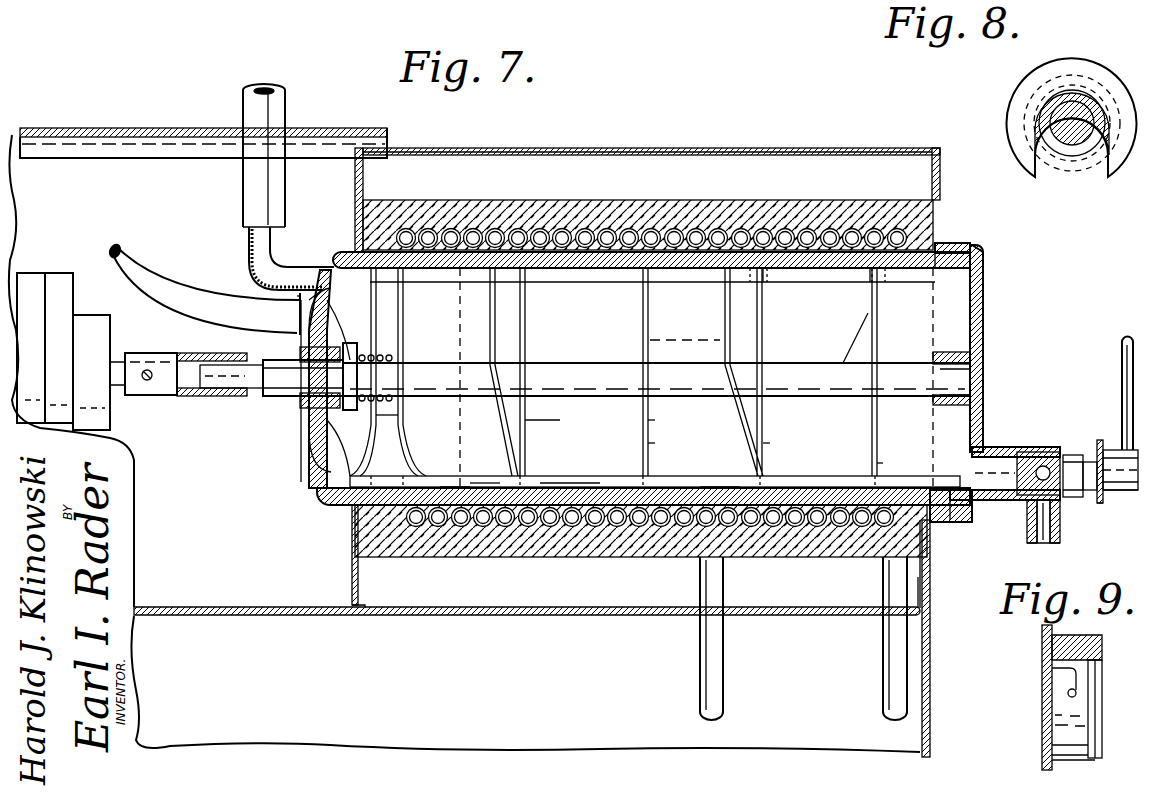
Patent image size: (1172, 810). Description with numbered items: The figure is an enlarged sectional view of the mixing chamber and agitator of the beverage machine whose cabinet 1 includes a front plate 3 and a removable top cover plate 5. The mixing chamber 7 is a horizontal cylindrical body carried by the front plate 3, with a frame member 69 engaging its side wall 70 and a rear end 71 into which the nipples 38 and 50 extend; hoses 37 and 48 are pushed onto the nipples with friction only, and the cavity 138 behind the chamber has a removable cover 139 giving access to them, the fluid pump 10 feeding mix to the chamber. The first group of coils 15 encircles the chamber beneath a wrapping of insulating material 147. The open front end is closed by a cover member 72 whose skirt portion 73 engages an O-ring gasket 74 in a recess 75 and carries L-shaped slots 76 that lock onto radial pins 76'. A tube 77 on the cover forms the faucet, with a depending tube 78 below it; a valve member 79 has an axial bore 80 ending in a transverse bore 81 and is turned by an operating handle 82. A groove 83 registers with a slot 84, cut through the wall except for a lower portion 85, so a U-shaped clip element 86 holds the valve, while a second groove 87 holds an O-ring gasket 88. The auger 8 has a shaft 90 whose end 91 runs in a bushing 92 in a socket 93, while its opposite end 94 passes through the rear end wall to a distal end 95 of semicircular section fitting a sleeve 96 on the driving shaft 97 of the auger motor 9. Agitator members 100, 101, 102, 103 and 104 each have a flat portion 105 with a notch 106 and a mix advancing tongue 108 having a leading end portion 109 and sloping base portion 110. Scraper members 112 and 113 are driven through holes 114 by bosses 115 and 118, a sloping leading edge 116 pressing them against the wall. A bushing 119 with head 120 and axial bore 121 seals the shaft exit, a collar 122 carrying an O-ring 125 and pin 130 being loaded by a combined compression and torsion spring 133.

In FIG. 7, the cabinet 1 is at (778, 141).
In FIG. 7, the front plate 3 is at (932, 677).
In FIG. 9, the front plate 3 is at (1042, 751).
In FIG. 7, the removable top cover plate 5 is at (680, 147).
In FIG. 7, the mixing chamber 7 is at (643, 378).
In FIG. 7, the mixing and mix advancing auger 8 is at (579, 357).
In FIG. 7, the auger motor 9 is at (70, 274).
In FIG. 7, the fluid pump 10 is at (474, 233).
In FIG. 7, the first group of coils 15 is at (580, 243).
In FIG. 7, the hose 37 is at (287, 114).
In FIG. 7, the nipple 38 is at (290, 262).
In FIG. 7, the hose 48 is at (167, 277).
In FIG. 7, the nipple 50 is at (300, 330).
In FIG. 7, the frame member 69 is at (352, 564).
In FIG. 7, the side wall 70 is at (352, 530).
In FIG. 9, the side wall 70 is at (1042, 636).
In FIG. 7, the rear end 71 is at (310, 468).
In FIG. 7, the cover member 72 is at (985, 312).
In FIG. 9, the cover member 72 is at (1102, 671).
In FIG. 7, the skirt portion 73 is at (950, 250).
In FIG. 7, the O-ring gasket 74 is at (975, 252).
In FIG. 9, the O-ring gasket 74 is at (1085, 641).
In FIG. 7, the recess 75 is at (990, 262).
In FIG. 9, the L-shaped slots 76 is at (1033, 689).
In FIG. 9, the radially extending pins 76' is at (1104, 721).
In FIG. 7, the tube 77 is at (997, 450).
In FIG. 8, the tube 77 is at (1100, 173).
In FIG. 7, the depending tube 78 is at (1023, 525).
In FIG. 7, the valve member 79 is at (1135, 465).
In FIG. 8, the valve member 79 is at (1040, 130).
In FIG. 7, the axial bore 80 is at (1020, 480).
In FIG. 7, the transverse bore 81 is at (1043, 470).
In FIG. 7, the operating handle 82 is at (1133, 345).
In FIG. 7, the peripheral groove 83 is at (1125, 492).
In FIG. 8, the peripheral groove 83 is at (1068, 162).
In FIG. 7, the slot 84 is at (1080, 455).
In FIG. 8, the slot 84 is at (1025, 100).
In FIG. 7, the portion 85 is at (1108, 505).
In FIG. 8, the portion 85 is at (1050, 172).
In FIG. 7, the U-shaped clip element 86 is at (1103, 452).
In FIG. 8, the U-shaped clip element 86 is at (1108, 82).
In FIG. 7, the second peripheral groove 87 is at (1043, 447).
In FIG. 7, the O-ring gasket 88 is at (1066, 502).
In FIG. 7, the shaft 90 is at (672, 366).
In FIG. 7, the reduced diameter end 91 is at (985, 388).
In FIG. 7, the bushing 92 is at (985, 370).
In FIG. 7, the socket 93 is at (985, 343).
In FIG. 7, the opposite end 94 is at (275, 384).
In FIG. 7, the distal end 95 is at (198, 386).
In FIG. 7, the sleeve 96 is at (215, 356).
In FIG. 7, the driving shaft 97 is at (120, 358).
In FIG. 7, the agitator member 100 is at (400, 433).
In FIG. 7, the agitator member 101 is at (530, 436).
In FIG. 7, the agitator member 102 is at (655, 443).
In FIG. 7, the agitator member 103 is at (770, 443).
In FIG. 7, the agitator member 104 is at (883, 463).
In FIG. 7, the flat portion 105 is at (548, 329).
In FIG. 7, the notch 106 is at (655, 421).
In FIG. 7, the mix advancing tongue 108 is at (481, 355).
In FIG. 7, the leading end portion 109 is at (491, 341).
In FIG. 7, the base portion 110 is at (648, 304).
In FIG. 7, the scraper member 112 is at (483, 480).
In FIG. 7, the scraper member 113 is at (844, 336).
In FIG. 7, the holes 114 is at (566, 480).
In FIG. 7, the bosses 115 is at (455, 459).
In FIG. 7, the sloping leading edge 116 is at (748, 480).
In FIG. 7, the bosses 118 is at (760, 301).
In FIG. 7, the bushing 119 is at (300, 391).
In FIG. 7, the head 120 is at (310, 412).
In FIG. 7, the axial bore 121 is at (303, 378).
In FIG. 7, the collar 122 is at (300, 437).
In FIG. 7, the resilient O-ring 125 is at (266, 309).
In FIG. 7, the pin 130 is at (335, 442).
In FIG. 7, the combined compression and torsion spring 133 is at (392, 332).
In FIG. 7, the cavity 138 is at (234, 612).
In FIG. 7, the removable cover 139 is at (140, 106).
In FIG. 7, the insulating material 147 is at (742, 205).